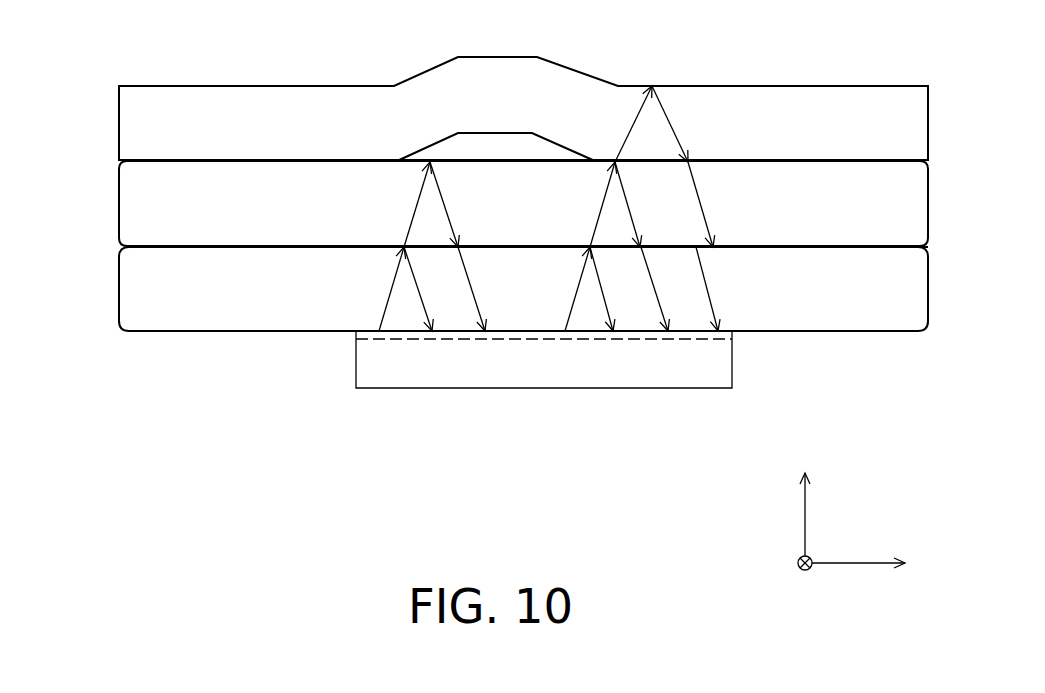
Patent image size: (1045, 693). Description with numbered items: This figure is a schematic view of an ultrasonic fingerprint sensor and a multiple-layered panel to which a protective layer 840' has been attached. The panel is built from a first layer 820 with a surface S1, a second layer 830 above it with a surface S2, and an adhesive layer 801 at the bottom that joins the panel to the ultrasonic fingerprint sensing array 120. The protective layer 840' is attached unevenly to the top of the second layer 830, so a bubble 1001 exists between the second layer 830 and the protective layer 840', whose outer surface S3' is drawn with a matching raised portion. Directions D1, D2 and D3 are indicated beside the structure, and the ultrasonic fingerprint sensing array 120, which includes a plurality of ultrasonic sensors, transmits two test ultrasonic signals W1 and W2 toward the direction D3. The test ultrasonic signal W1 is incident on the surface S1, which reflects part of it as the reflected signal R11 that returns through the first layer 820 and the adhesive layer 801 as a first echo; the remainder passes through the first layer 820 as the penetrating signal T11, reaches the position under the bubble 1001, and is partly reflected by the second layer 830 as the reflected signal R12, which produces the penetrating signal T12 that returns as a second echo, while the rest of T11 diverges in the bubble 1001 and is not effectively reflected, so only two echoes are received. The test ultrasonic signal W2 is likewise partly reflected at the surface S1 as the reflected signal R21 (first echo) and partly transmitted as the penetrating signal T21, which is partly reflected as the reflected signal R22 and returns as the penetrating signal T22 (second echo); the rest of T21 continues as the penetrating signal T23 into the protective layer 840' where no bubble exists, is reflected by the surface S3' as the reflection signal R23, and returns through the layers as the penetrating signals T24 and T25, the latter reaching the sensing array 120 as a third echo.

The bubble 1001 is at (458, 150).
The surface of protective layer S3' is at (222, 78).
The protective layer 840' is at (485, 108).
The surface of second layer S2 is at (163, 163).
The second layer 830 is at (127, 226).
The surface of first layer S1 is at (165, 249).
The first layer 820 is at (127, 311).
The adhesive layer 801 is at (357, 334).
The ultrasonic fingerprint sensing array 120 is at (356, 374).
The test ultrasonic signal W1 is at (388, 297).
The reflected signal R11 is at (443, 284).
The penetrating signal T11 is at (415, 212).
The reflected signal R12 is at (448, 203).
The penetrating signal T12 is at (467, 268).
The test ultrasonic signal W2 is at (572, 295).
The reflected signal R21 is at (628, 284).
The penetrating signal T21 is at (600, 210).
The reflected signal R22 is at (627, 202).
The penetrating signal T22 is at (648, 258).
The penetrating signal T23 is at (637, 116).
The reflection signal R23 is at (668, 117).
The penetrating signal T24 is at (700, 200).
The penetrating signal T25 is at (708, 280).
The direction D1 is at (872, 566).
The direction D2 is at (787, 569).
The direction D3 is at (806, 497).